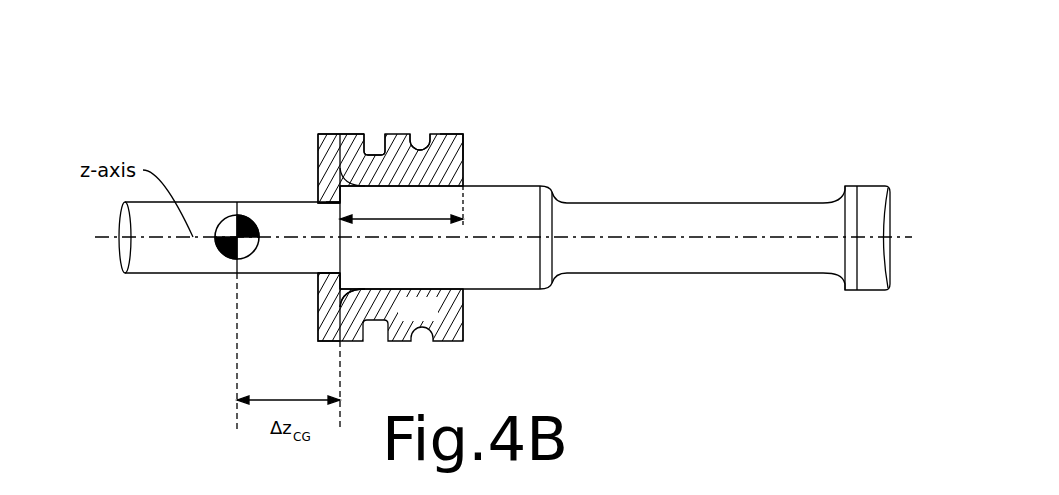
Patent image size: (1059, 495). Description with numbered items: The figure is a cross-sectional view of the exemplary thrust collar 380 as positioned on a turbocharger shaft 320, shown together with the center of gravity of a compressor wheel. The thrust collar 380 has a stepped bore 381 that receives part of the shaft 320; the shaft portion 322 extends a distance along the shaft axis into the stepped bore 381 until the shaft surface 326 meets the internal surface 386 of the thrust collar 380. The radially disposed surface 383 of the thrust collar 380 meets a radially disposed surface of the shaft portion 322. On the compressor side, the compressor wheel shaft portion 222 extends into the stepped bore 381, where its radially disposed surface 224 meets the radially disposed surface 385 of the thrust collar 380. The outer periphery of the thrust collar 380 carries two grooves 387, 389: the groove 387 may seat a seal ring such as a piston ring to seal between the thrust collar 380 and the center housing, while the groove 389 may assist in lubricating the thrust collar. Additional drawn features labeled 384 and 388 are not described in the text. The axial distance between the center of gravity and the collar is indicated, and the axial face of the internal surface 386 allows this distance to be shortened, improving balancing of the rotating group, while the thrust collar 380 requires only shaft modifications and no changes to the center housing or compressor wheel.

The compressor wheel shaft portion 222 is at (203, 258).
The radially disposed surface 224 is at (317, 202).
The shaft 320 is at (673, 235).
The shaft portion 322 is at (388, 214).
The surface 326 is at (340, 284).
The thrust collar 380 is at (400, 320).
The stepped bore 381 is at (472, 179).
The radially disposed surface 383 is at (462, 300).
The hub outer edge 384 is at (466, 152).
The radially disposed surface 385 is at (318, 287).
The internal surface 386 is at (328, 134).
The groove 387 is at (366, 138).
The upper flange 388 is at (318, 152).
The groove 389 is at (412, 138).